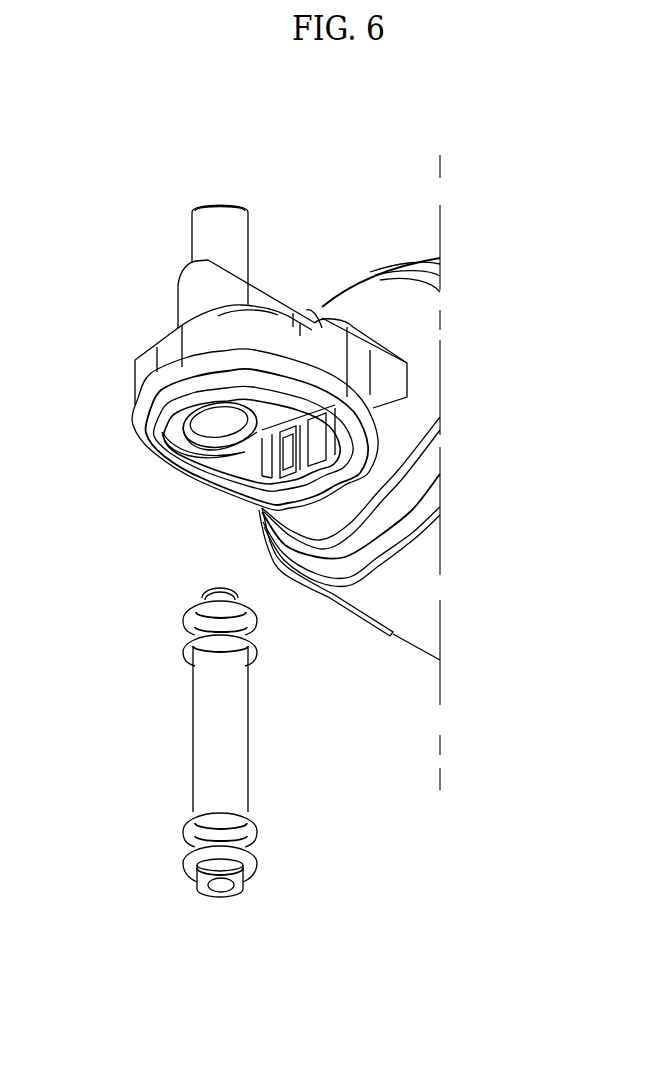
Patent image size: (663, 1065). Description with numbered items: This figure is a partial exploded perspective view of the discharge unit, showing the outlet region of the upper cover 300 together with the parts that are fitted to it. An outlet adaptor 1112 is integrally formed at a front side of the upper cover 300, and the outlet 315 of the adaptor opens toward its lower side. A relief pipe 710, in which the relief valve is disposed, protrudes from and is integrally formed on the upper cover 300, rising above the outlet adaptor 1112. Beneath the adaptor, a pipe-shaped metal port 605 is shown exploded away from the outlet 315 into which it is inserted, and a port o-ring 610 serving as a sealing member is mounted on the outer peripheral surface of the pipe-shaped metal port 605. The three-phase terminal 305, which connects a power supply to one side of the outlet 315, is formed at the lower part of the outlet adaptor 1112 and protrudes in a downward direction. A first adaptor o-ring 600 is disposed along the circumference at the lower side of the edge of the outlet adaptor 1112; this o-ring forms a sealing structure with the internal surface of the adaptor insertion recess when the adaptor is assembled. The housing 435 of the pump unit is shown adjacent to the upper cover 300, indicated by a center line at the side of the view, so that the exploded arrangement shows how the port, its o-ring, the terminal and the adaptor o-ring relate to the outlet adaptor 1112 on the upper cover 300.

The upper cover 300 is at (362, 300).
The three-phase terminal 305 is at (313, 462).
The outlet 315 is at (203, 424).
The housing 435 is at (403, 595).
The first adaptor o-ring 600 is at (140, 411).
The pipe-shaped metal port 605 is at (226, 727).
The port o-ring 610 is at (248, 860).
The relief pipe 710 is at (184, 246).
The outlet adaptor 1112 is at (167, 347).